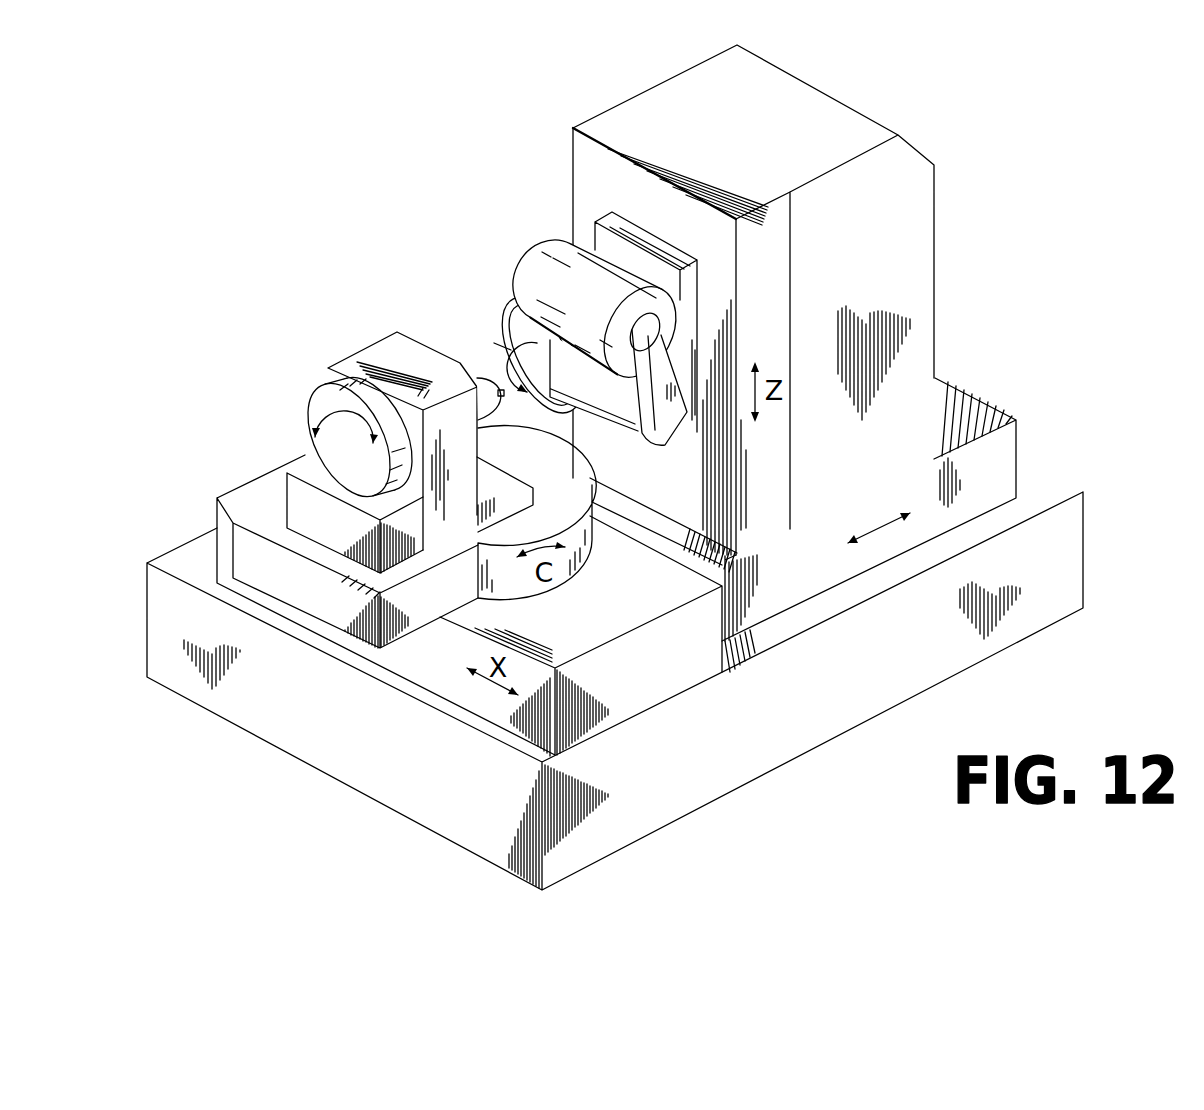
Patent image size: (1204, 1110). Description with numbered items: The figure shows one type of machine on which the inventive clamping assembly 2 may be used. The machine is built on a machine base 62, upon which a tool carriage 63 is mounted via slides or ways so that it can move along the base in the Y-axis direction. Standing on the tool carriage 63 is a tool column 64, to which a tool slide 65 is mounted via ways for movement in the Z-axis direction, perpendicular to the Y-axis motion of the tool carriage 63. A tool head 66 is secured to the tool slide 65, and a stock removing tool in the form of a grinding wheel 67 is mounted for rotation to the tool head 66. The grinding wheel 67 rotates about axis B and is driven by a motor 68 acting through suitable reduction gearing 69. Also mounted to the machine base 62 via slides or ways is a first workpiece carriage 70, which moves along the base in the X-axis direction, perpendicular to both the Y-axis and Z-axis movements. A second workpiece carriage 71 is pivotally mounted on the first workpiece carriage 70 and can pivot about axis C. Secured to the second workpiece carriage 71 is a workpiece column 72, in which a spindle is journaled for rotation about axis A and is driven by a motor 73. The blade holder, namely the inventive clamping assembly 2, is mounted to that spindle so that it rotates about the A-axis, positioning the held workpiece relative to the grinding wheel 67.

The clamping assembly 2 is at (478, 383).
The machine base 62 is at (795, 715).
The tool carriage 63 is at (1008, 448).
The tool column 64 is at (878, 244).
The tool slide 65 is at (605, 120).
The tool head 66 is at (634, 236).
The grinding wheel 67 is at (514, 325).
The motor 68 is at (556, 313).
The reduction gearing 69 is at (677, 420).
The first workpiece carriage 70 is at (430, 672).
The second workpiece carriage 71 is at (325, 607).
The workpiece column 72 is at (383, 350).
The motor 73 is at (307, 421).